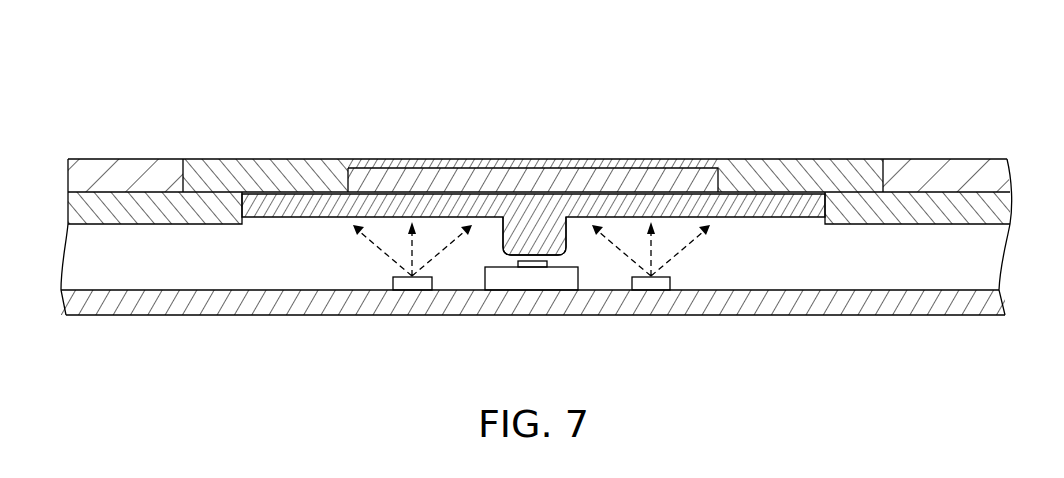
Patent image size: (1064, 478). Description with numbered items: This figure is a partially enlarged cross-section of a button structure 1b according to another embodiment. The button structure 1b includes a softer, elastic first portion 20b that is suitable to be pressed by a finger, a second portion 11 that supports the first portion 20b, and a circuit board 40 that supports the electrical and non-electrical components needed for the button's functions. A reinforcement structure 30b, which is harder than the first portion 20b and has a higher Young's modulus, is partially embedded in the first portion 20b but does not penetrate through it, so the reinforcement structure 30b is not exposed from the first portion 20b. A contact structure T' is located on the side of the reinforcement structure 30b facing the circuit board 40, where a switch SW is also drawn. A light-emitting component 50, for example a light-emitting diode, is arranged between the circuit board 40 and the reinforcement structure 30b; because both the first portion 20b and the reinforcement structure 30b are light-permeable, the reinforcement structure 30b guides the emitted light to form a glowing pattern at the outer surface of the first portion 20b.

The button structure 1b is at (113, 108).
The second portion 11 is at (973, 155).
The first portion 20b is at (783, 145).
The reinforcement structure 30b is at (737, 225).
The circuit board 40 is at (813, 308).
The light-emitting component 50 is at (652, 291).
The switch element SW is at (543, 277).
The contact structure T' is at (500, 293).